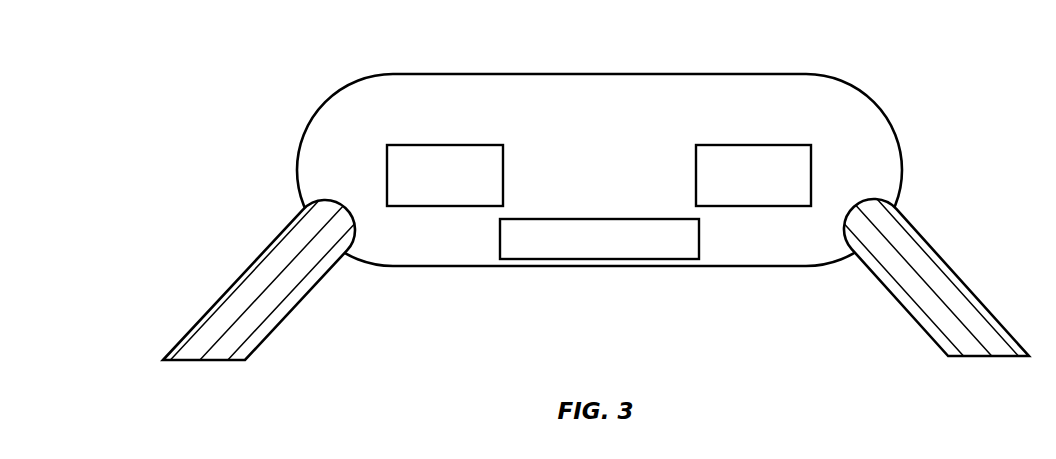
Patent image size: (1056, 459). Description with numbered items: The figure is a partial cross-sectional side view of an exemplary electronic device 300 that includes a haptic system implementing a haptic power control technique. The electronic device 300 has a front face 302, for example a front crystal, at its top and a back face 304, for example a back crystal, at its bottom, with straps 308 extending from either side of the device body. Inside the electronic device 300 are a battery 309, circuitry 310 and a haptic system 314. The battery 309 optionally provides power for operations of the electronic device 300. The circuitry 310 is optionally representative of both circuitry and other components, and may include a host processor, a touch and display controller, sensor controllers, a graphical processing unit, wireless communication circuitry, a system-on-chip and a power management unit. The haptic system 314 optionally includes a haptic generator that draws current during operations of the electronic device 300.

The electronic device 300 is at (964, 72).
The front face 302 is at (424, 73).
The back face 304 is at (598, 266).
The straps 308 is at (293, 300).
The battery 309 is at (504, 178).
The circuitry 310 is at (700, 240).
The haptic system 314 is at (812, 177).